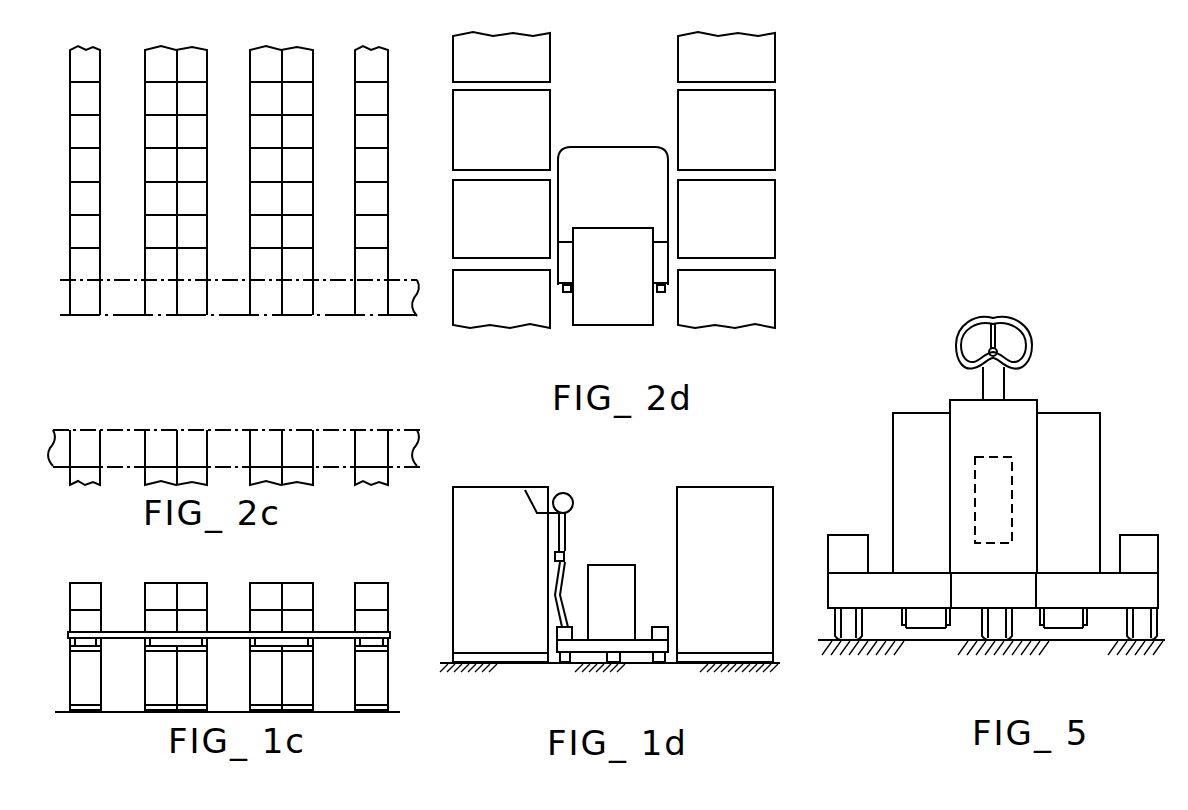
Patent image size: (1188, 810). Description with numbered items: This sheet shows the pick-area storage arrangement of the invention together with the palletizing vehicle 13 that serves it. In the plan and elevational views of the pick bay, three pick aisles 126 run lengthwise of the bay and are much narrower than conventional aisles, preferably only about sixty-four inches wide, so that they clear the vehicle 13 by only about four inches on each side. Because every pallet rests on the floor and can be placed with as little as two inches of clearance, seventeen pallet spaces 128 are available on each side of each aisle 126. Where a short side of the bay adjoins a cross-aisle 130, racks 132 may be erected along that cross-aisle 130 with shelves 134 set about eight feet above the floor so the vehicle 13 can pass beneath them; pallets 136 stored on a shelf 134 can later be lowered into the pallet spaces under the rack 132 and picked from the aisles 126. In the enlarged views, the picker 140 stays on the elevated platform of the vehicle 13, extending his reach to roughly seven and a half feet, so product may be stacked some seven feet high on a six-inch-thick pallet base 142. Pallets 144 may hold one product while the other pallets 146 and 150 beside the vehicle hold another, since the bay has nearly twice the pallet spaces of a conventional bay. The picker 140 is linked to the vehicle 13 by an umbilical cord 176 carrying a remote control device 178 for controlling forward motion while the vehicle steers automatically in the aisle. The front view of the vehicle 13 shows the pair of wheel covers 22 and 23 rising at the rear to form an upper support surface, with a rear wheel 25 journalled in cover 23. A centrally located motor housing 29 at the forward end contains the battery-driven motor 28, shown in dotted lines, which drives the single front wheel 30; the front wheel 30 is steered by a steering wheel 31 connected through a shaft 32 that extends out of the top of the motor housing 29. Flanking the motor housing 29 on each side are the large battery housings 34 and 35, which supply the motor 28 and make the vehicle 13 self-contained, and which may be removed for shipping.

In FIG. 2D, the palletizing vehicle 13 is at (615, 160).
In FIG. 1D, the palletizing vehicle 13 is at (620, 625).
In FIG. 5, the wheel cover 22 is at (852, 540).
In FIG. 5, the wheel cover 23 is at (1140, 540).
In FIG. 5, the rear wheel 25 is at (1128, 630).
In FIG. 5, the motor 28 is at (1012, 487).
In FIG. 5, the motor housing 29 is at (835, 631).
In FIG. 5, the front wheel 30 is at (1012, 630).
In FIG. 5, the steering wheel 31 is at (1031, 344).
In FIG. 5, the shaft 32 is at (995, 386).
In FIG. 5, the battery housing 34 is at (893, 447).
In FIG. 5, the battery housing 35 is at (1100, 452).
In FIG. 2C, the pick aisle 126 is at (137, 188).
In FIG. 1C, the pick aisle 126 is at (140, 694).
In FIG. 2C, the pallet space 128 is at (158, 70).
In FIG. 2C, the cross-aisle 130 is at (258, 393).
In FIG. 1C, the rack 132 is at (101, 642).
In FIG. 1C, the shelf 134 is at (113, 631).
In FIG. 1C, the pallet 136 is at (164, 591).
In FIG. 1D, the picker 140 is at (563, 494).
In FIG. 1D, the pallet base 142 is at (488, 662).
In FIG. 2D, the pallets 144 is at (762, 68).
In FIG. 2D, the container 146 is at (763, 139).
In FIG. 2D, the pallets 150 is at (760, 299).
In FIG. 1D, the umbilical cord 176 is at (613, 573).
In FIG. 1D, the remote control device 178 is at (590, 567).